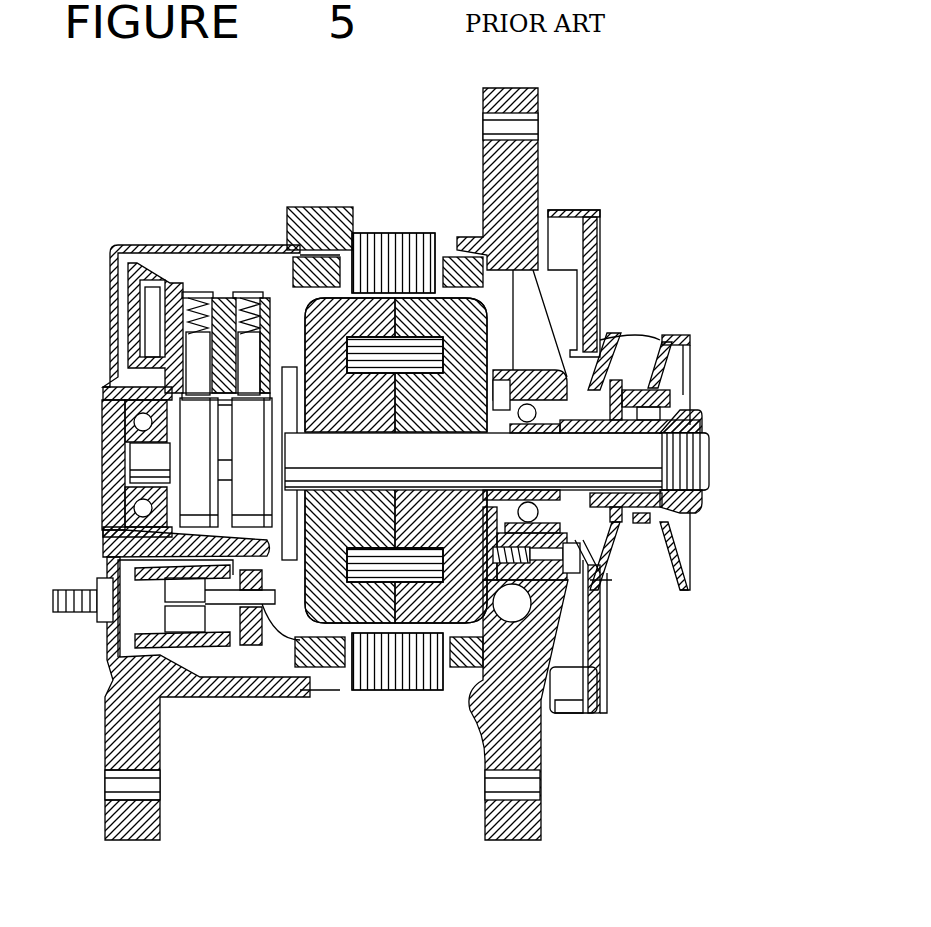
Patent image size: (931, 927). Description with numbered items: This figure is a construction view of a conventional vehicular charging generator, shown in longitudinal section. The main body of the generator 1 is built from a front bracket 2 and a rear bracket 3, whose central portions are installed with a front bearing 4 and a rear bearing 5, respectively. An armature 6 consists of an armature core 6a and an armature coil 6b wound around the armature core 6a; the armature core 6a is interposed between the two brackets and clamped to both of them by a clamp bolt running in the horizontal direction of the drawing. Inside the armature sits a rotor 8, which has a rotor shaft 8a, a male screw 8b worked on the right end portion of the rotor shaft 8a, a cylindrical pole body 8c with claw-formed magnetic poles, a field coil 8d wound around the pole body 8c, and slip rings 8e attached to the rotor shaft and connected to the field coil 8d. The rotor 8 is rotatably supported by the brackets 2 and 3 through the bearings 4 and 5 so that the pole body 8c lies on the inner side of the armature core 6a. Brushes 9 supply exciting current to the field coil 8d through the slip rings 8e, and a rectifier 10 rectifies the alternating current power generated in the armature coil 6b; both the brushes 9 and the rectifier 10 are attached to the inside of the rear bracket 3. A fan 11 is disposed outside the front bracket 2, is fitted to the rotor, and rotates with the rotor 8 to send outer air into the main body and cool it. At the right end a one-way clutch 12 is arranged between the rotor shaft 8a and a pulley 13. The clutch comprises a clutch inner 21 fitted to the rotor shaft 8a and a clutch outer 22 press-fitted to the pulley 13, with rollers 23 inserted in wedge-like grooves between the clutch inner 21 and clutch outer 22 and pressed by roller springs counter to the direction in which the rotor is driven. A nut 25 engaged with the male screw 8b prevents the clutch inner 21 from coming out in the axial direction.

The main body of a generator 1 is at (140, 248).
The front bracket 2 is at (487, 763).
The rear bracket 3 is at (160, 770).
The front bearing 4 is at (510, 583).
The rear bearing 5 is at (140, 407).
The armature 6 is at (363, 217).
The armature core 6a is at (405, 230).
The armature coil 6b is at (300, 263).
The rotor 8 is at (310, 622).
The rotor shaft 8a is at (558, 450).
The male screw 8b is at (707, 463).
The cylindrical pole body 8c is at (337, 623).
The field coil 8d is at (393, 582).
The slip rings 8e is at (232, 540).
The brushes 9 is at (197, 297).
The rectifier 10 is at (120, 633).
The fan 11 is at (573, 717).
The one-way clutch 12 is at (672, 400).
The pulley 13 is at (680, 335).
The clutch inner 21 is at (700, 418).
The clutch outer 22 is at (693, 410).
The rollers 23 is at (660, 533).
The nut 25 is at (703, 498).